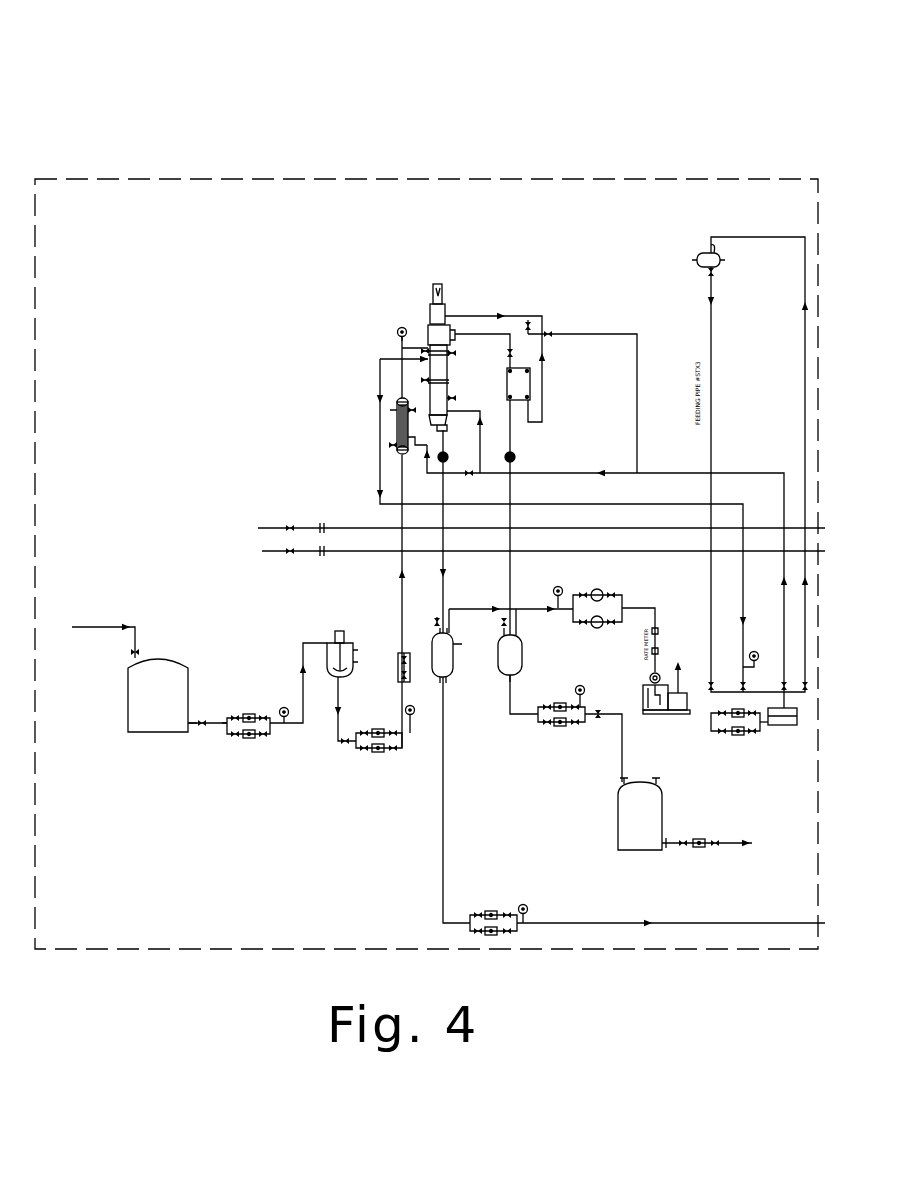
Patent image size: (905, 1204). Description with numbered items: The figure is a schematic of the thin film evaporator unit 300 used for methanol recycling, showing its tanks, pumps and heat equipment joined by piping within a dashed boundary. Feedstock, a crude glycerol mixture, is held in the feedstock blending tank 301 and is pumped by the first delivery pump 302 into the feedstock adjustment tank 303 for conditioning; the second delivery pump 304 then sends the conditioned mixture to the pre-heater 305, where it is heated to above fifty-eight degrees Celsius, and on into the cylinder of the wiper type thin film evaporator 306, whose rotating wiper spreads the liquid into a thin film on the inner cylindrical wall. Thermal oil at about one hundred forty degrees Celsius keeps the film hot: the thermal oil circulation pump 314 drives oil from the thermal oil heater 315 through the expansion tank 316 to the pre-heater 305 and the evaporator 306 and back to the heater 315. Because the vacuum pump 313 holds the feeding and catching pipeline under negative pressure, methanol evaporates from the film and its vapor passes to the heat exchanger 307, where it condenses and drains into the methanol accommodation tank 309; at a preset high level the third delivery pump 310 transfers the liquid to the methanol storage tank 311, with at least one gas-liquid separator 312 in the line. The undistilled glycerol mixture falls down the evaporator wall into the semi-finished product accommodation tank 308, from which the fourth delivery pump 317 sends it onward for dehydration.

The thin film evaporator unit 300 is at (270, 178).
The feedstock blending tank 301 is at (151, 718).
The first delivery pump 302 is at (245, 746).
The feedstock adjustment tank 303 is at (345, 648).
The second delivery pump 304 is at (377, 762).
The pre-heater 305 is at (400, 416).
The wiper type thin film evaporator 306 is at (433, 373).
The heat exchanger 307 is at (530, 390).
The semi-finished product accommodation tank 308 is at (449, 668).
The methanol accommodation tank 309 is at (516, 660).
The third delivery pump 310 is at (560, 725).
The methanol storage tank 311 is at (628, 845).
The gas-liquid separator 312 is at (594, 590).
The vacuum pump 313 is at (655, 706).
The thermal oil circulation pump 314 is at (735, 738).
The thermal oil heater 315 is at (782, 722).
The expansion tank 316 is at (697, 258).
The fourth delivery pump 317 is at (490, 912).